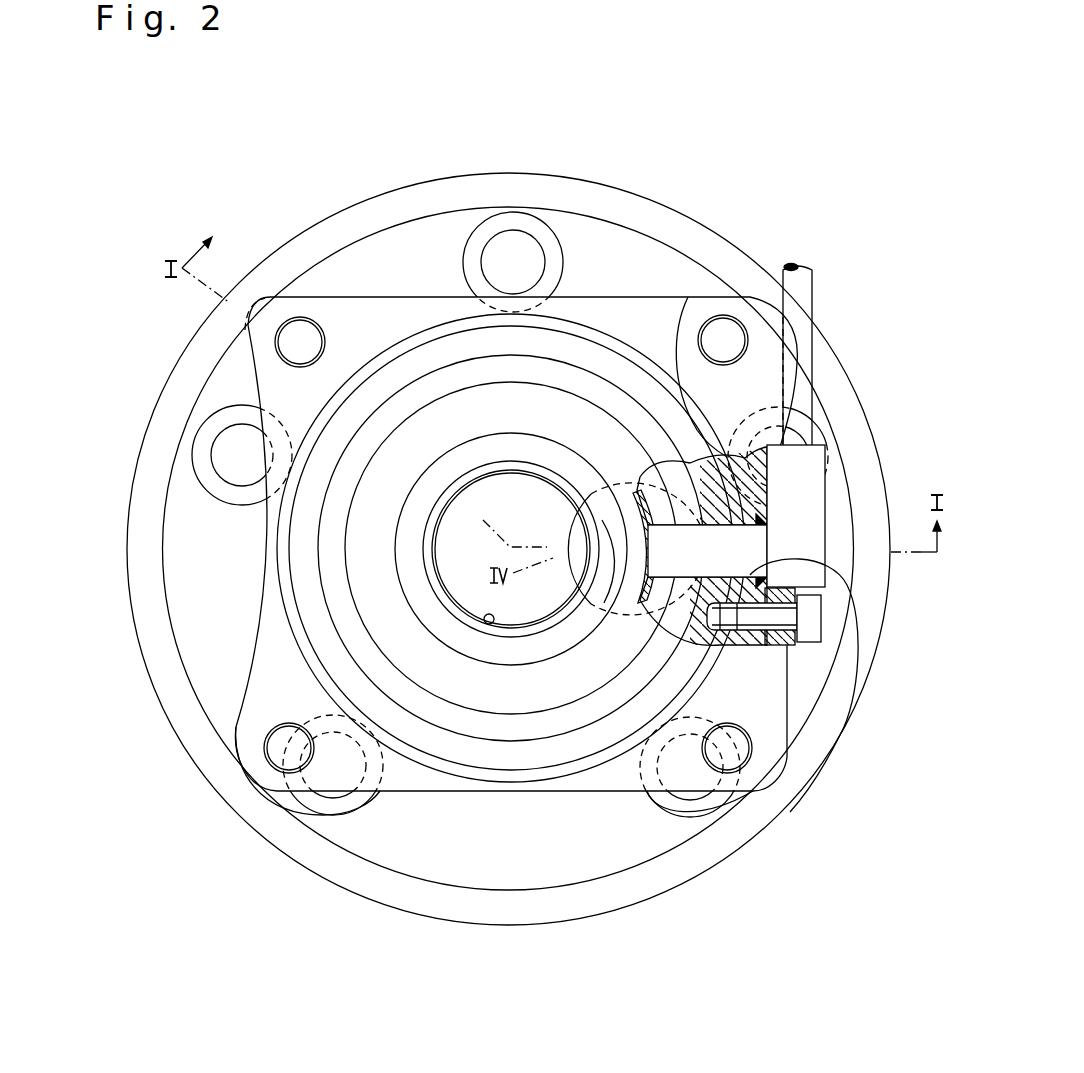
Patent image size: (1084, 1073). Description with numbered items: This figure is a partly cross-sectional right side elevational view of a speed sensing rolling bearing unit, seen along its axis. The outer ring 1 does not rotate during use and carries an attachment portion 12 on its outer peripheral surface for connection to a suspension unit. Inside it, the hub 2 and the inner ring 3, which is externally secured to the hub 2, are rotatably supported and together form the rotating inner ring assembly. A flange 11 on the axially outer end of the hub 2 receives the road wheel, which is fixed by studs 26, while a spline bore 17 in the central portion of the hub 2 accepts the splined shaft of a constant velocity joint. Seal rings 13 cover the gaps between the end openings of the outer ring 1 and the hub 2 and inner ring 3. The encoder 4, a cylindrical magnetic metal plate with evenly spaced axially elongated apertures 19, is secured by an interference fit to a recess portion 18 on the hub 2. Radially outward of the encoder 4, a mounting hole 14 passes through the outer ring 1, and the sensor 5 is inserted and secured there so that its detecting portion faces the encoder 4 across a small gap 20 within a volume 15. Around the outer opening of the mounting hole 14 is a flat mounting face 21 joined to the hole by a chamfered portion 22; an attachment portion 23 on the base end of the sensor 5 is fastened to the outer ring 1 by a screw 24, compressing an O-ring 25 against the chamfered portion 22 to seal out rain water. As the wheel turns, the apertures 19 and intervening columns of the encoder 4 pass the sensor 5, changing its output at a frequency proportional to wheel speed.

The outer ring 1 is at (233, 735).
The hub 2 is at (407, 248).
The inner ring 3 is at (517, 697).
The encoder 4 is at (740, 540).
The sensor 5 is at (683, 300).
The flange 11 is at (485, 188).
The attachment portion 12 is at (277, 787).
The seal rings 13 is at (337, 600).
The mounting hole 14 is at (810, 578).
The volume 15 is at (663, 610).
The spline bore 17 is at (492, 625).
The recess portion 18 is at (636, 598).
The apertures 19 is at (603, 537).
The small gap 20 is at (660, 592).
The flat mounting face 21 is at (767, 483).
The chamfered portion 22 is at (787, 700).
The attachment portion 23 is at (807, 622).
The screw 24 is at (810, 647).
The O-ring 25 is at (767, 522).
The studs 26 is at (515, 243).